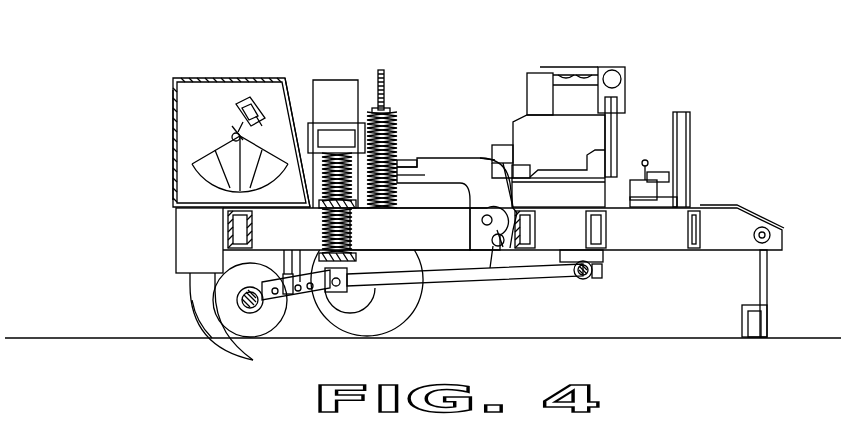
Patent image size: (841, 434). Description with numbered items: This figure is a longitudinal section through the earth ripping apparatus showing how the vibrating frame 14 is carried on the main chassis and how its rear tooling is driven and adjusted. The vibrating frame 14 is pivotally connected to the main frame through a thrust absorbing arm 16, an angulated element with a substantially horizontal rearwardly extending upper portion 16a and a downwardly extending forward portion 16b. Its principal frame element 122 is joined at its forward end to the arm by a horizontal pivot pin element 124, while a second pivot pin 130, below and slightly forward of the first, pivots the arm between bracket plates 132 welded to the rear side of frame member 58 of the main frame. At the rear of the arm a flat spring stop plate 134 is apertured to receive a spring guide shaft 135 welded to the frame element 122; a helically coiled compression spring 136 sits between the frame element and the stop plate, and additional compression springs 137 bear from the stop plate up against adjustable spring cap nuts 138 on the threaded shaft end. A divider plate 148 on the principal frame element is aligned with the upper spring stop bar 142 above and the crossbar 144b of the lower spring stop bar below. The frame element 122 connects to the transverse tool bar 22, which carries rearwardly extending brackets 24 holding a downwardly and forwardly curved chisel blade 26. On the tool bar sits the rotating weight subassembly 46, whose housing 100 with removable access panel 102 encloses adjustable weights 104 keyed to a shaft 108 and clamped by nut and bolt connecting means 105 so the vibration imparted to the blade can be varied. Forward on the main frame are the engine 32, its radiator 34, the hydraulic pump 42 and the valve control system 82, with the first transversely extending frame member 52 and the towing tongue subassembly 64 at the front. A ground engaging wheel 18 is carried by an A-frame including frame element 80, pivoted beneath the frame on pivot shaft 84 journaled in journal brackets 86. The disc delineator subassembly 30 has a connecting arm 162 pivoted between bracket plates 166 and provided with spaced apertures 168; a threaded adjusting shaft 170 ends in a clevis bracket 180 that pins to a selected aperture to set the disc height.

The vibrating frame 14 is at (315, 292).
The thrust absorbing arm 16 is at (443, 152).
The upper portion 16a is at (462, 165).
The forward portion 16b is at (475, 200).
The ground engaging wheel 18 is at (400, 300).
The tool bar 22 is at (258, 229).
The brackets 24 is at (202, 247).
The chisel blade 26 is at (213, 348).
The disc delineator subassembly 30 is at (200, 318).
The engine 32 is at (568, 139).
The radiator 34 is at (684, 112).
The hydraulic pump 42 is at (508, 148).
The rotating weight subassembly 46 is at (280, 66).
The first transversely extending frame member 52 is at (610, 226).
The frame member 58 is at (540, 228).
The towing tongue subassembly 64 is at (770, 272).
The frame element 80 is at (465, 294).
The valve control system 82 is at (645, 160).
The pivot shaft 84 is at (582, 280).
The journal brackets 86 is at (604, 262).
The housing 100 is at (236, 78).
The removable access panel 102 is at (173, 112).
The adjustable weights 104 is at (204, 134).
The nut and bolt connecting means 105 is at (245, 110).
The shaft 108 is at (236, 167).
The principal frame element 122 is at (433, 233).
The horizontal pivot pin element 124 is at (482, 223).
The pivot pin 130 is at (496, 250).
The bracket plates 132 is at (500, 248).
The spring stop plate 134 is at (410, 168).
The spring guide shaft 135 is at (381, 70).
The helically coiled compression spring 136 is at (360, 210).
The additional compression springs 137 is at (403, 158).
The adjustable spring cap nuts 138 is at (370, 110).
The upper spring stop bar 142 is at (337, 130).
The crossbar 144b is at (340, 292).
The divider plate 148 is at (351, 262).
The connecting arms 162 is at (285, 318).
The bracket plates 166 is at (314, 292).
The spaced apertures 168 is at (307, 262).
The threaded adjusting shaft 170 is at (264, 229).
The clevis bracket 180 is at (289, 296).